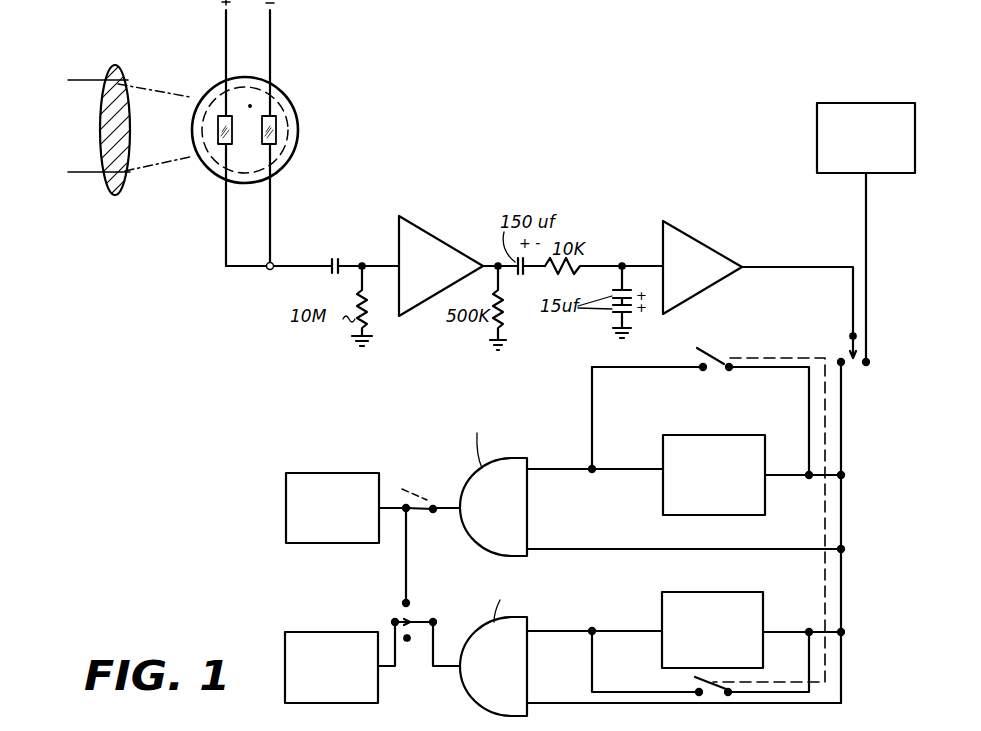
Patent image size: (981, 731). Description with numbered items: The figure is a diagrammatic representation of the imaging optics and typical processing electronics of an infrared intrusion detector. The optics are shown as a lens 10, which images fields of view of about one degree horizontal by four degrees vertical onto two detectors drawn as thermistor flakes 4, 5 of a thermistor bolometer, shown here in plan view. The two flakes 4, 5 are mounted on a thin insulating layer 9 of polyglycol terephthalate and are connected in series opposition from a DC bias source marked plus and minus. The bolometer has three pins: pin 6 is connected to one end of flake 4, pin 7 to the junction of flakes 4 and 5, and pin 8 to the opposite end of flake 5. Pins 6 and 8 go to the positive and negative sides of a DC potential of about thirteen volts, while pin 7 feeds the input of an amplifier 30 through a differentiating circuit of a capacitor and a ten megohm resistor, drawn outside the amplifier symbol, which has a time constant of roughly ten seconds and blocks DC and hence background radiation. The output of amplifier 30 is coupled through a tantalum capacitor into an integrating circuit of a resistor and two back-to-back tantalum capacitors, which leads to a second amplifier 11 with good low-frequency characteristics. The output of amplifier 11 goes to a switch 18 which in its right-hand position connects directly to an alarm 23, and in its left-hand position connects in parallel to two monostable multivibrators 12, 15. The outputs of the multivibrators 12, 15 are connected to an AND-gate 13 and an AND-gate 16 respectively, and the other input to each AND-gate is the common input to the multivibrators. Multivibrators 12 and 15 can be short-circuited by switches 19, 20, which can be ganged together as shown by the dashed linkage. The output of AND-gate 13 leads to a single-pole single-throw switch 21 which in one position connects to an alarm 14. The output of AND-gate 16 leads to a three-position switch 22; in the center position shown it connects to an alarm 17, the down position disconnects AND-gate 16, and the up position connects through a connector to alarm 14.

The thermistor flake 4 is at (221, 140).
The thermistor flake 5 is at (273, 128).
The bolometer pin 6 is at (224, 32).
The bolometer pin 7 is at (248, 270).
The bolometer pin 8 is at (271, 43).
The insulating layer 9 is at (242, 95).
The lens 10 is at (119, 70).
The amplifier 11 is at (697, 277).
The monostable multivibrator 12 is at (724, 485).
The AND-gate 13 is at (504, 519).
The alarm 14 is at (330, 472).
The monostable multivibrator 15 is at (735, 612).
The AND-gate 16 is at (504, 677).
The alarm 17 is at (323, 632).
The switch 18 is at (850, 352).
The switch 19 is at (712, 356).
The switch 20 is at (712, 683).
The single-pole single-throw switch 21 is at (416, 512).
The three-position switch 22 is at (419, 618).
The alarm 23 is at (815, 133).
The amplifier 30 is at (432, 277).